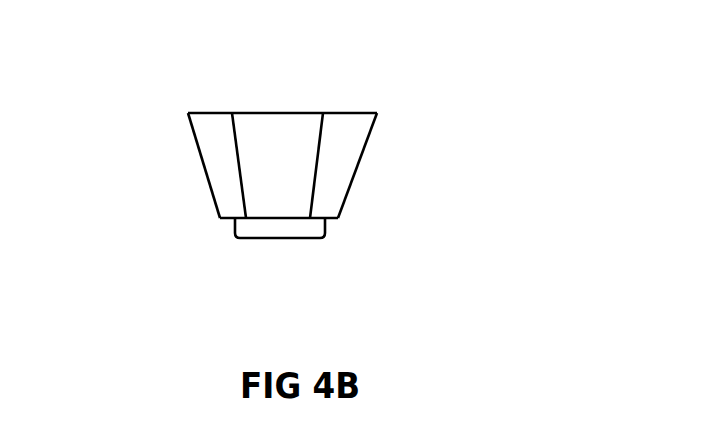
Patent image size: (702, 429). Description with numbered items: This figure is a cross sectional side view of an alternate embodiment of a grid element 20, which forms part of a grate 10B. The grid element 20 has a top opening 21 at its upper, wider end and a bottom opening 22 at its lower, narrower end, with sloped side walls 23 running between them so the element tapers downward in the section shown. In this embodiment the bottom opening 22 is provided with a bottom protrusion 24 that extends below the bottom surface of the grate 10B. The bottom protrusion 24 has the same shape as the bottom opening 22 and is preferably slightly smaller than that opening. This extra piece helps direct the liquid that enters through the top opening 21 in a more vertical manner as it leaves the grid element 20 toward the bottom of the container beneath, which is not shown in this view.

The grate 10B is at (305, 167).
The grid element 20 is at (359, 101).
The top opening 21 is at (282, 113).
The bottom opening 22 is at (327, 220).
The side wall 23 is at (333, 155).
The bottom protrusion 24 is at (278, 237).